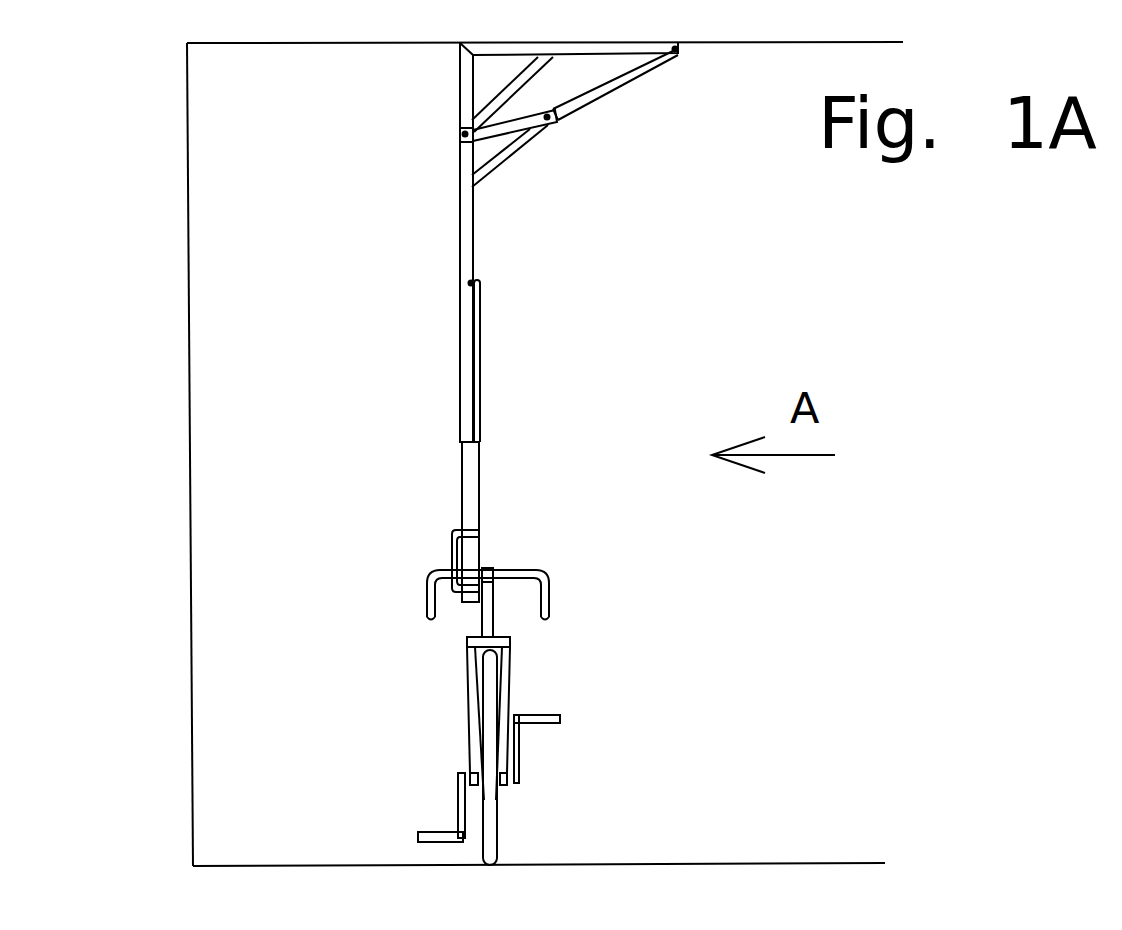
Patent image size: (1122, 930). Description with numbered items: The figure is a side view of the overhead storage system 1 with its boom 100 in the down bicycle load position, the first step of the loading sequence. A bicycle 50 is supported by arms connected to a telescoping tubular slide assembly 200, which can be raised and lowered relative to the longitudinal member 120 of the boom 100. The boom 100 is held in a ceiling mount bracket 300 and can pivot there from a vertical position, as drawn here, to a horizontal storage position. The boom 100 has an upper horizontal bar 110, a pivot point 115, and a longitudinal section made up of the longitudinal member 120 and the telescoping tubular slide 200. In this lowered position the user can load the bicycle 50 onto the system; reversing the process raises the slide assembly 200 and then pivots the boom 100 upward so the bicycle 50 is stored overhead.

The overhead storage system 1 is at (323, 370).
The bicycle 50 is at (513, 683).
The boom 100 is at (471, 467).
The upper horizontal bar 110 is at (523, 123).
The pivot point 115 is at (463, 137).
The longitudinal member 120 is at (467, 218).
The telescoping tubular slide assembly 200 is at (453, 533).
The ceiling mount bracket 300 is at (457, 78).